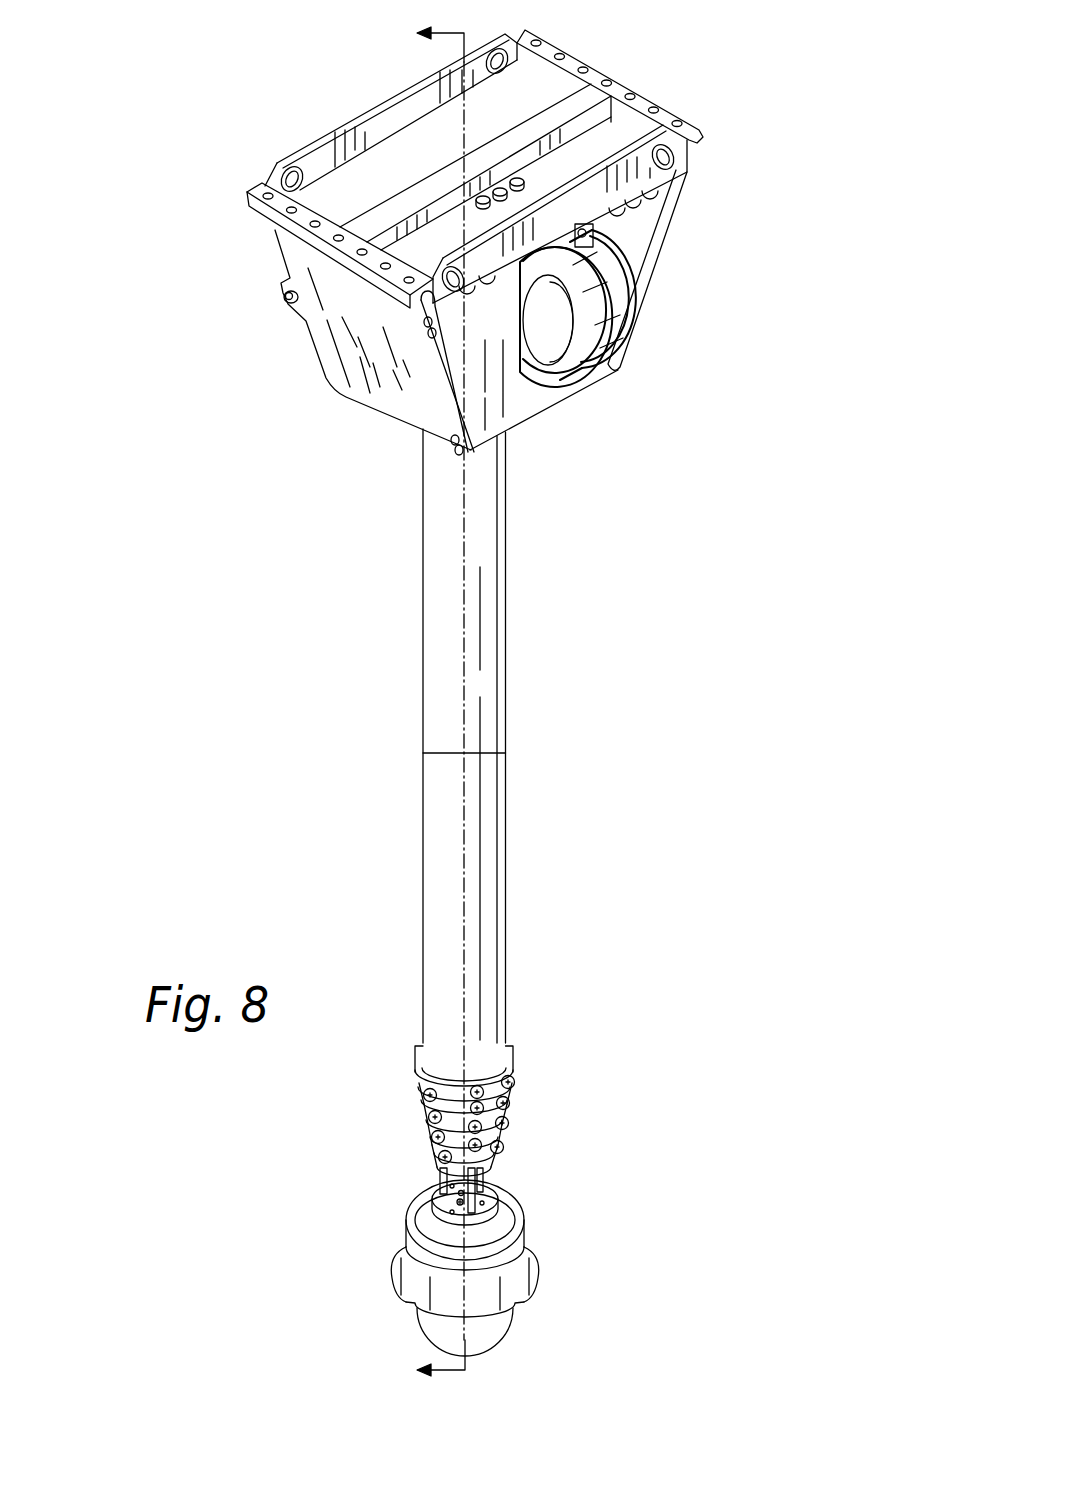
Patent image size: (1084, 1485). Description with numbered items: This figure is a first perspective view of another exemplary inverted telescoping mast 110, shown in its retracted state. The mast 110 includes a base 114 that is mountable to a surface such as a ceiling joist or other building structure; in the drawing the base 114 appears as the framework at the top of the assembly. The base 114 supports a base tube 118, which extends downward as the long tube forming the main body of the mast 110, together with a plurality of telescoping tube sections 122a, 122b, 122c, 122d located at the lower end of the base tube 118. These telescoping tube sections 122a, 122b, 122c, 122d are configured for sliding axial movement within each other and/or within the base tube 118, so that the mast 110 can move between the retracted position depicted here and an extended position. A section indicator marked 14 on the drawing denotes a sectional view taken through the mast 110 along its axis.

The inverted telescoping mast 110 is at (755, 209).
The base 114 is at (533, 107).
The base tube 118 is at (470, 742).
The telescoping tube section 122a is at (510, 1092).
The telescoping tube section 122b is at (503, 1117).
The telescoping tube section 122c is at (493, 1137).
The telescoping tube section 122d is at (493, 1153).
The section line 14- 14 is at (425, 704).